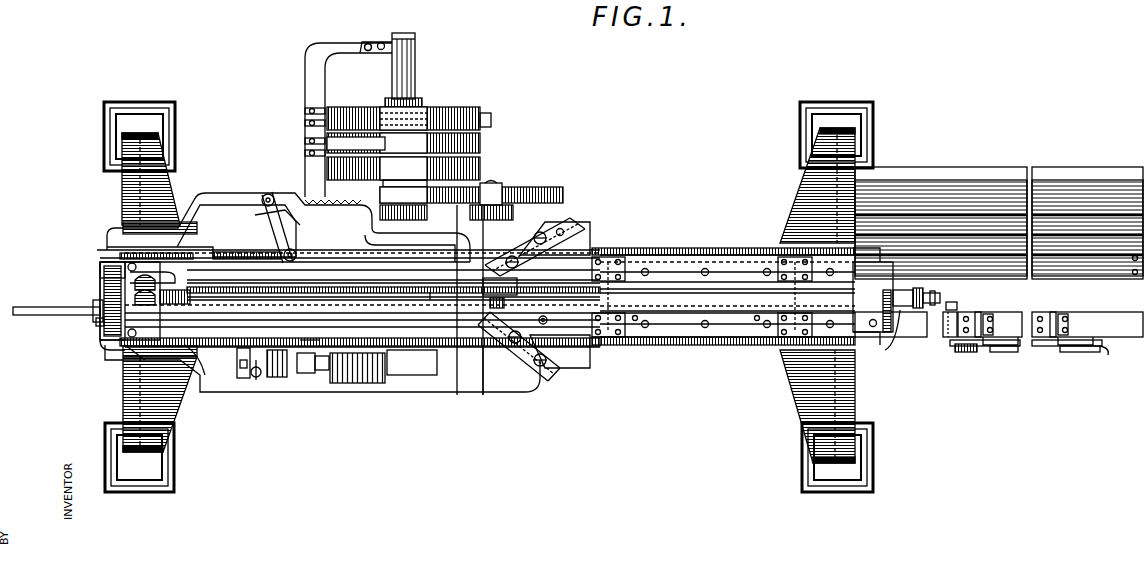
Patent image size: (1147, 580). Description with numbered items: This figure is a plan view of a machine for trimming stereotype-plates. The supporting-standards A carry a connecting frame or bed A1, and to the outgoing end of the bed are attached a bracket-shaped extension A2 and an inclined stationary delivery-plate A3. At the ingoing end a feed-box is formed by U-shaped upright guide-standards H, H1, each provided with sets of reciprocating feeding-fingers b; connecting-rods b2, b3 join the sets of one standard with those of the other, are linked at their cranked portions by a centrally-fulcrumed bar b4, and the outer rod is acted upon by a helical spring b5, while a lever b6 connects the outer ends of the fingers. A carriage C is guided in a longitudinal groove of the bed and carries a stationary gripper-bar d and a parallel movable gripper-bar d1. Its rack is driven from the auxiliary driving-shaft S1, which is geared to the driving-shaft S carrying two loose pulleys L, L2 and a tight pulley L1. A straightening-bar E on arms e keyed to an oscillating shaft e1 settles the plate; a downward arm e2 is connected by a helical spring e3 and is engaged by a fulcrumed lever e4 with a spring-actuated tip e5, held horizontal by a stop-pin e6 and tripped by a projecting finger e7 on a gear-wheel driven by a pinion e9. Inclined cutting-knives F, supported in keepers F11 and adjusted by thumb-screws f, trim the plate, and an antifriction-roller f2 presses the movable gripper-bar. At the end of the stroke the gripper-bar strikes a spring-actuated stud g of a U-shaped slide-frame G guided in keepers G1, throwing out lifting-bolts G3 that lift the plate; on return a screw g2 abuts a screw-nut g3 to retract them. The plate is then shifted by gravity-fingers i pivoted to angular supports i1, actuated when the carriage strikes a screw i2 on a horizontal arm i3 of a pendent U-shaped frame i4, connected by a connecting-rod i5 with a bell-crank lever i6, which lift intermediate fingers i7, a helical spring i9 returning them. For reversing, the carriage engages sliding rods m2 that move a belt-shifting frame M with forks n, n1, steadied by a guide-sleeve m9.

The supporting-standards A is at (170, 178).
The connecting frame or bed A1 is at (592, 228).
The bracket-shaped extension A2 is at (915, 337).
The inclined stationary delivery-plate A3 is at (998, 177).
The set of reciprocating feeding-fingers b is at (95, 302).
The connecting-rod b2 is at (100, 262).
The outer connecting-rod b3 is at (222, 197).
The centrally-fulcrumed bar b4 is at (262, 216).
The helical spring b5 is at (268, 194).
The lever b6 is at (95, 310).
The carriage C is at (675, 300).
The stationary gripper-bar d is at (192, 265).
The movable gripper-bar d1 is at (225, 345).
The straightening-bar E is at (242, 378).
The arms e is at (125, 350).
The oscillating shaft e1 is at (360, 383).
The arm e2 is at (258, 378).
The helical spring e3 is at (420, 375).
The fulcrumed lever e4 is at (280, 378).
The pivoted and spring-actuated tip e5 is at (310, 373).
The stop-pin e6 is at (244, 368).
The projecting finger e7 is at (325, 370).
The pinion e9 is at (490, 379).
The inclined cutting-knives F is at (560, 230).
The slide block F11 is at (590, 362).
The thumb-screws f is at (592, 238).
The antifriction-roller f2 is at (553, 313).
The U-shaped slide-frame G is at (730, 258).
The keepers G1 is at (598, 283).
The lifting-bolts G3 is at (618, 312).
The spring-actuated stud g is at (873, 296).
The screw g2 is at (916, 306).
The screw-nut g3 is at (890, 345).
The U-shaped upright guide-standard H is at (125, 330).
The U-shaped upright guide-standard H1 is at (458, 345).
The gravity-fingers i is at (993, 313).
The angular supports i1 is at (977, 312).
The screw i2 is at (945, 338).
The horizontal arm i3 is at (955, 295).
The pendent U-shaped frame i4 is at (973, 352).
The connecting-rod i5 is at (1048, 350).
The pendent bell-crank lever i6 is at (1088, 356).
The intermediate fingers i7 is at (995, 321).
The helical spring i9 is at (963, 352).
The loose pulley L is at (481, 167).
The tight pulley L1 is at (481, 137).
The loose pulley L2 is at (452, 112).
The U-shaped belt-shifting frame M is at (310, 160).
The horizontal sliding rods m2 is at (15, 308).
The guide-sleeve m9 is at (390, 52).
The belt-shifting fork n is at (385, 145).
The belt-shifting fork n1 is at (492, 118).
The driving-shaft S is at (418, 80).
The auxiliary driving-shaft S1 is at (515, 192).